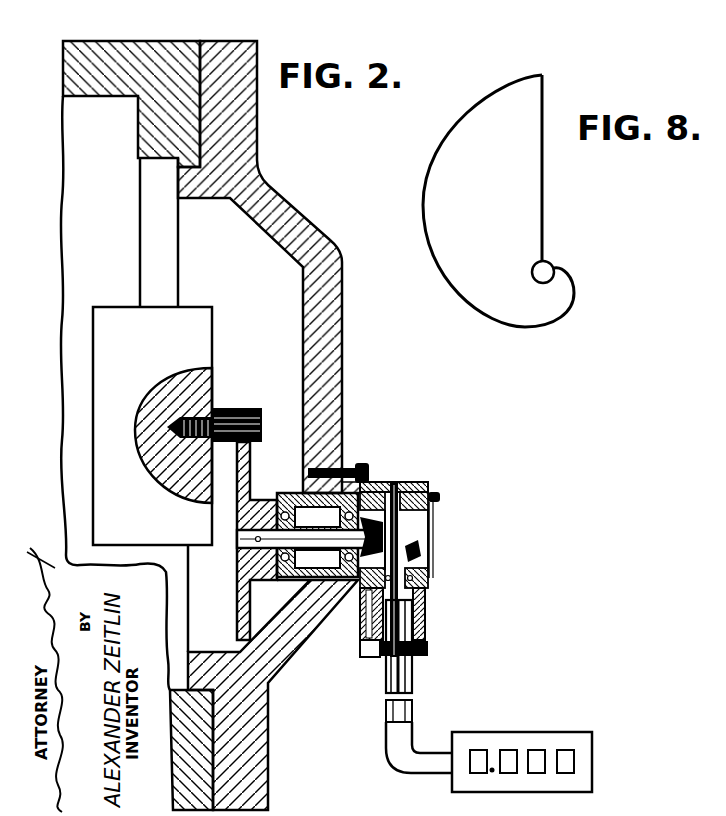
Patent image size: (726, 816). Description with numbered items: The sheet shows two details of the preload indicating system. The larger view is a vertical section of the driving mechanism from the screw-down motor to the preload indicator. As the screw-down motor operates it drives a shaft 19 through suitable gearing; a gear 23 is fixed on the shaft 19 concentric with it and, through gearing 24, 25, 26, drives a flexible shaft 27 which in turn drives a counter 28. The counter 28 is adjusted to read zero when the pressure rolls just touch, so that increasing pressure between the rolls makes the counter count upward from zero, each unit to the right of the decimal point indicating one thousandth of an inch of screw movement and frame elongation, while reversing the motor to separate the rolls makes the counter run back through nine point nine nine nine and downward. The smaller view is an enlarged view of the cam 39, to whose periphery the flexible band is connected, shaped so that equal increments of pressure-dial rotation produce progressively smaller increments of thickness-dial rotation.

In FIG. 2, the shaft 19 is at (207, 386).
In FIG. 2, the gear 23 is at (258, 407).
In FIG. 2, the gearing 24 is at (250, 460).
In FIG. 2, the gearing 25 is at (395, 522).
In FIG. 2, the gearing 26 is at (412, 555).
In FIG. 2, the flexible shaft 27 is at (415, 672).
In FIG. 2, the counter 28 is at (520, 733).
In FIG. 8, the cam 39 is at (535, 215).